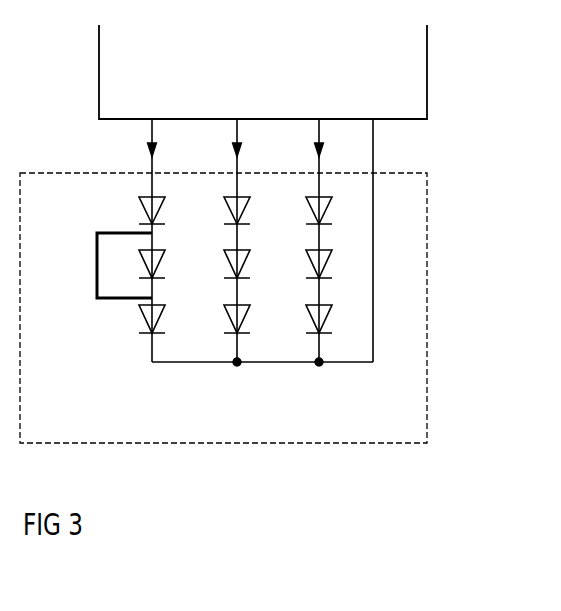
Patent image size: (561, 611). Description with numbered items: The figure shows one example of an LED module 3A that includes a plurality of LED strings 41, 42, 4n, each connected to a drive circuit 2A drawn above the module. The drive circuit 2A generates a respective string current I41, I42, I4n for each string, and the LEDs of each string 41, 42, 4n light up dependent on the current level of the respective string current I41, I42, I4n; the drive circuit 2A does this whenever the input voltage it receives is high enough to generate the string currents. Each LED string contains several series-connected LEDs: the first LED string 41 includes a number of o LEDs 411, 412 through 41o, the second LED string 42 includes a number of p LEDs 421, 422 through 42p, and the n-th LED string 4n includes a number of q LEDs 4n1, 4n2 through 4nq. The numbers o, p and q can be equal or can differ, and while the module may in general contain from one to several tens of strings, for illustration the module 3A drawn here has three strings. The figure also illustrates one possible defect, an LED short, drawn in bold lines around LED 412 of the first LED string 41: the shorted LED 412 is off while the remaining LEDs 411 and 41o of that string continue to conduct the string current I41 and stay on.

The drive circuit 2A is at (258, 48).
The LED module 3A is at (428, 283).
The first LED string 41 is at (97, 316).
The second LED string 42 is at (225, 316).
The n-th LED string 4n is at (305, 316).
The LED of first LED string 411 is at (140, 210).
The LED of first LED string 412 is at (140, 264).
The LED of first LED string 41o is at (140, 319).
The LED of second LED string 421 is at (225, 210).
The LED of second LED string 422 is at (225, 264).
The LED of second LED string 42p is at (225, 319).
The LED of n-th LED string 4n1 is at (305, 210).
The LED of n-th LED string 4n2 is at (305, 264).
The LED of n-th LED string 4nq is at (305, 319).
The string current I41 is at (172, 158).
The string current I42 is at (256, 158).
The string current I4n is at (338, 158).